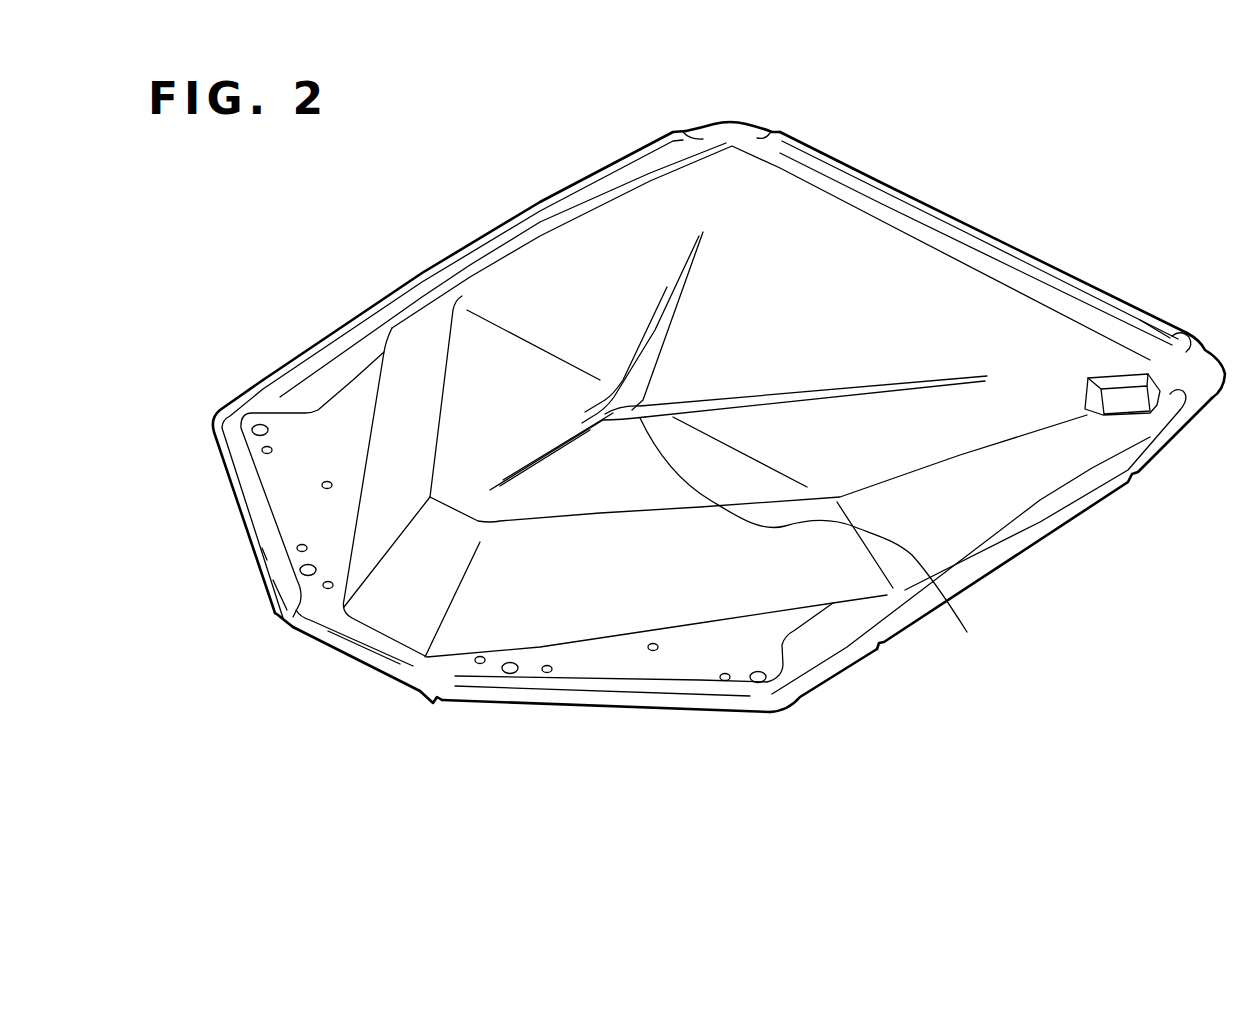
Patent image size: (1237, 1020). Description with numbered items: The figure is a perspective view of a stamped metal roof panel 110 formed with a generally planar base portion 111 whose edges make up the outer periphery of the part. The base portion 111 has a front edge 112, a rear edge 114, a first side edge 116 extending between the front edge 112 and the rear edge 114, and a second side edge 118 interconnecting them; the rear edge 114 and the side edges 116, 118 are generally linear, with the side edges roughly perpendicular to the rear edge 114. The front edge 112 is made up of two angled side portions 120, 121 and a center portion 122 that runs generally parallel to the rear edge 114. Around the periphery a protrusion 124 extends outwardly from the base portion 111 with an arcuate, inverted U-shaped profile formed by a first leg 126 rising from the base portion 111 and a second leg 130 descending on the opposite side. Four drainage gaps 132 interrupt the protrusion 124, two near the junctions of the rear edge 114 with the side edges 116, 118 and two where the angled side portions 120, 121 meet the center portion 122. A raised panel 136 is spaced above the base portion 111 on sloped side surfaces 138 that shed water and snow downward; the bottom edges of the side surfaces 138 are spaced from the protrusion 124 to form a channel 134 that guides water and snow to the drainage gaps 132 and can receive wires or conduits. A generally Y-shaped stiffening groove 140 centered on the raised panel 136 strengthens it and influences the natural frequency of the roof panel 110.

The stamped metal roof panel 110 is at (880, 142).
The base portion 111 is at (283, 510).
The front edge 112 is at (380, 678).
The rear edge 114 is at (1040, 260).
The first side edge 116 is at (422, 273).
The second side edge 118 is at (1007, 568).
The angled side portion 120 is at (260, 577).
The angled side portion 121 is at (712, 712).
The center portion 122 is at (323, 647).
The protrusion 124 is at (593, 170).
The first leg 126 is at (1173, 337).
The second leg 130 is at (840, 672).
The drainage gap 132 is at (733, 124).
The channel 134 is at (380, 332).
The raised panel 136 is at (709, 345).
The side surfaces 138 is at (387, 445).
The stiffening groove 140 is at (908, 550).